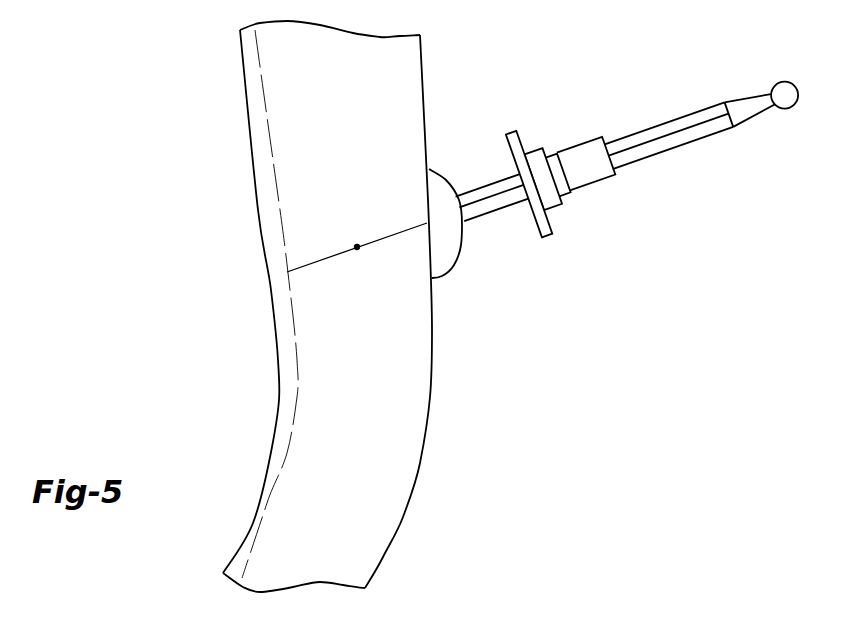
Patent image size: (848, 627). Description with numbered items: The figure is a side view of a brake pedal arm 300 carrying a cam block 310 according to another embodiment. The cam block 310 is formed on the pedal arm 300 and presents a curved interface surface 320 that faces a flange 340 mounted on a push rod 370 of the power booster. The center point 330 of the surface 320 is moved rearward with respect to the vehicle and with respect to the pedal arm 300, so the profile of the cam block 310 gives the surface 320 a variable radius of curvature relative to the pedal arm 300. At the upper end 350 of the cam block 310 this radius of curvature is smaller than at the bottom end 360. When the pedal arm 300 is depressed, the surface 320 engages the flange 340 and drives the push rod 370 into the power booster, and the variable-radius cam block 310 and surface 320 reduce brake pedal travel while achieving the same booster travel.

The brake pedal arm 300 is at (387, 80).
The cam block 310 is at (437, 188).
The curved interface surface 320 is at (468, 260).
The center point 330 is at (357, 247).
The flange 340 is at (520, 152).
The upper end 350 is at (444, 172).
The bottom end 360 is at (450, 283).
The push rod 370 is at (670, 134).